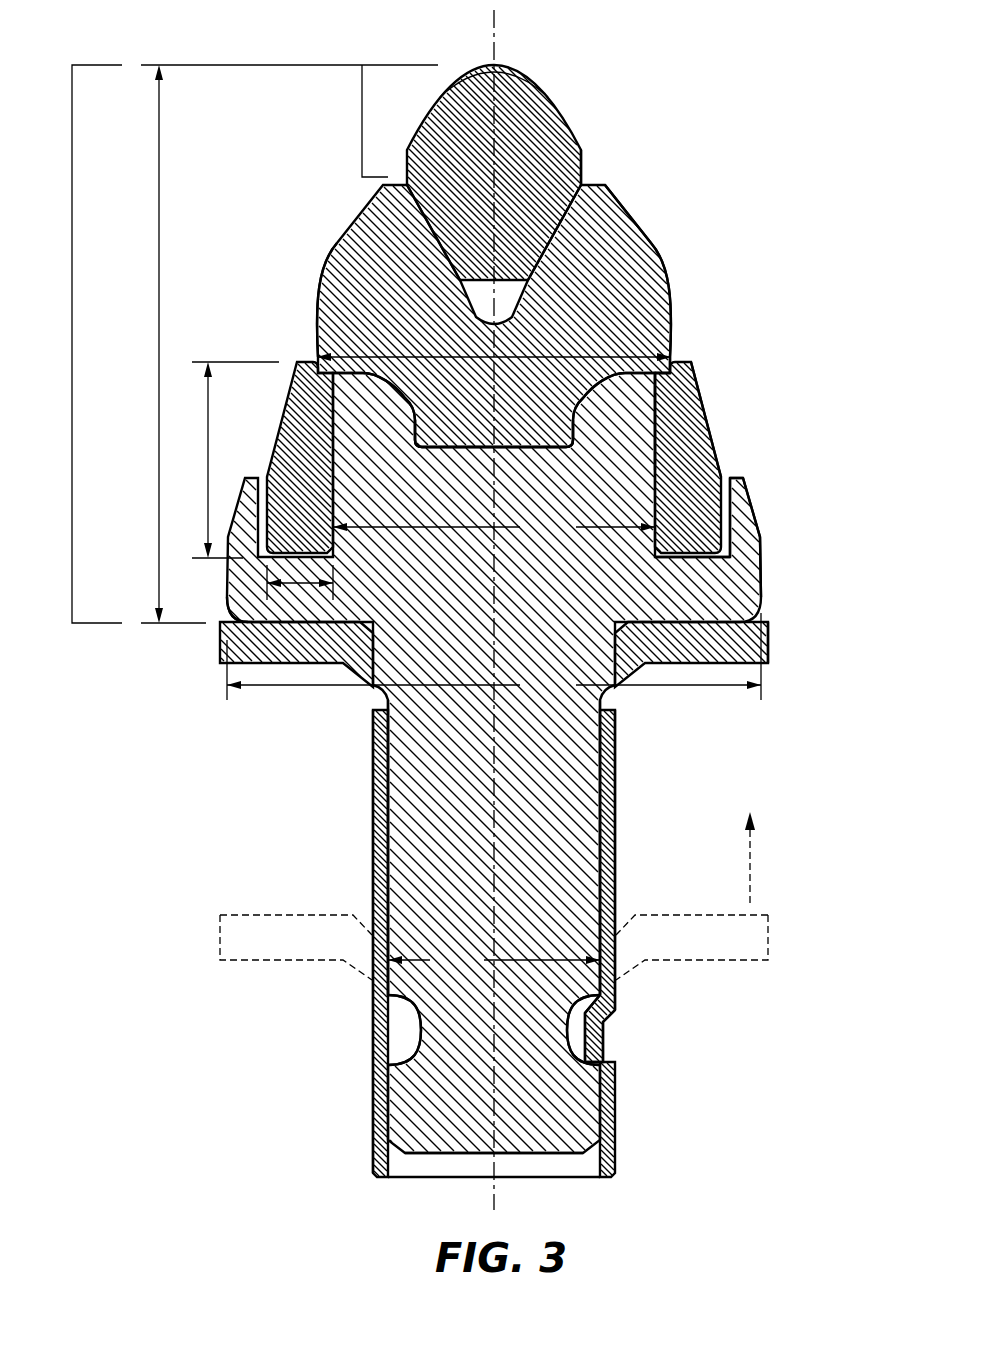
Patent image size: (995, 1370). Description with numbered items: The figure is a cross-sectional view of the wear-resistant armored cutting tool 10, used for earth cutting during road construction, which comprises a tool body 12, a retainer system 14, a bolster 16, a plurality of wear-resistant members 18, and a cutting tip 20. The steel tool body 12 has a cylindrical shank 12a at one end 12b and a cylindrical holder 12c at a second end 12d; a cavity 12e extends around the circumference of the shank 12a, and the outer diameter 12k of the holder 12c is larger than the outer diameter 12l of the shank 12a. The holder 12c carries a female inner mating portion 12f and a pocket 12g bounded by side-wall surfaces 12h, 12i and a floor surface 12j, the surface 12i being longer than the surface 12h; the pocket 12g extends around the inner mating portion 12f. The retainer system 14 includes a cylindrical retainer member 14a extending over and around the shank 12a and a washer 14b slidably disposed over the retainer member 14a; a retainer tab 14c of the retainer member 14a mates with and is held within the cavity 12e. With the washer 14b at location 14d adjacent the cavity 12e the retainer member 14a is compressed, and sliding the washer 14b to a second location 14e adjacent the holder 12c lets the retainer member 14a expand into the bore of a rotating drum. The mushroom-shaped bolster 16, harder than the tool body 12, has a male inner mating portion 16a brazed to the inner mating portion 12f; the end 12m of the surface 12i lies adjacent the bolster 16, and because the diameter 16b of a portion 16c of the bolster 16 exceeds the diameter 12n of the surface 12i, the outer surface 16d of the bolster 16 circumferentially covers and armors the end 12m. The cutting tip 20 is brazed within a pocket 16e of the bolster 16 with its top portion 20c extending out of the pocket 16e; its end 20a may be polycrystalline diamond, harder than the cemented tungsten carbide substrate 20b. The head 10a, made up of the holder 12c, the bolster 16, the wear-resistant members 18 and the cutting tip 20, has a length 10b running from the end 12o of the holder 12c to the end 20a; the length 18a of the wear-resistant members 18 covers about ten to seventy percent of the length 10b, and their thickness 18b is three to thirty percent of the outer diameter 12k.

The wear-resistant armored cutting tool 10 is at (760, 143).
The head 10a is at (72, 340).
The length of head 10b is at (289, 344).
The tool body 12 is at (547, 640).
The shank 12a is at (556, 862).
The end of tool body 12b is at (560, 1153).
The holder 12c is at (706, 418).
The second end of tool body 12d is at (706, 412).
The cavity 12e is at (570, 1035).
The inner mating portion of holder 12f is at (723, 483).
The pocket 12g is at (733, 557).
The surface 12h is at (740, 513).
The surface 12i is at (715, 441).
The surface 12j is at (760, 575).
The outer diameter of holder 12k is at (494, 656).
The outer diameter of shank 12l is at (494, 960).
The end of surface 12m is at (700, 391).
The diameter of surface 12n is at (494, 527).
The end of holder 12o is at (230, 601).
The retainer system 14 is at (310, 1070).
The retainer member 14a is at (373, 1103).
The washer 14b is at (267, 648).
The retainer tab 14c is at (595, 1045).
The location 14d is at (775, 937).
The second location 14e is at (773, 650).
The bolster 16 is at (632, 281).
The inner mating portion of bolster 16a is at (447, 430).
The diameter of bolster portion 16b is at (407, 350).
The portion of bolster 16c is at (691, 371).
The outer surface of bolster 16d is at (673, 346).
The pocket of bolster 16e is at (607, 204).
The wear-resistant members 18 is at (274, 437).
The length of wear-resistant members 18a is at (235, 460).
The thickness of wear-resistant members 18b is at (310, 588).
The cutting tip 20 is at (532, 118).
The end of cutting tip 20a is at (520, 62).
The substrate of cutting tip 20b is at (552, 168).
The top portion of cutting tip 20c is at (360, 125).